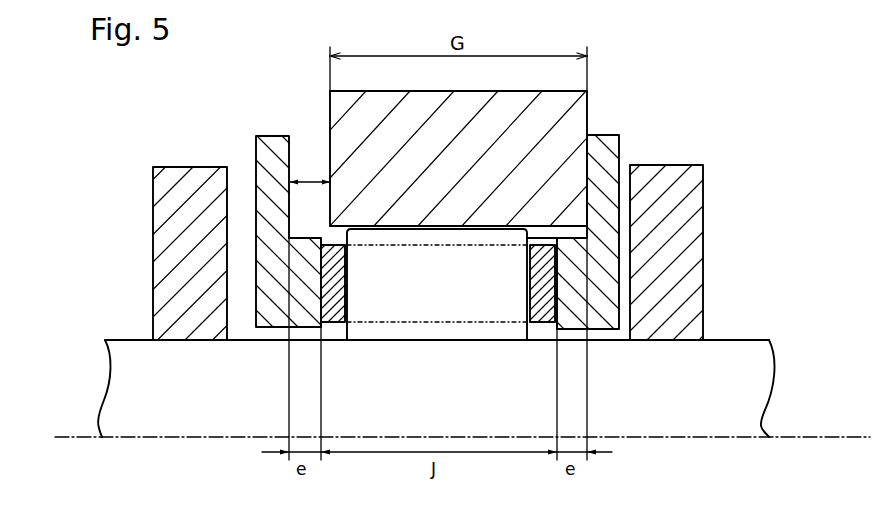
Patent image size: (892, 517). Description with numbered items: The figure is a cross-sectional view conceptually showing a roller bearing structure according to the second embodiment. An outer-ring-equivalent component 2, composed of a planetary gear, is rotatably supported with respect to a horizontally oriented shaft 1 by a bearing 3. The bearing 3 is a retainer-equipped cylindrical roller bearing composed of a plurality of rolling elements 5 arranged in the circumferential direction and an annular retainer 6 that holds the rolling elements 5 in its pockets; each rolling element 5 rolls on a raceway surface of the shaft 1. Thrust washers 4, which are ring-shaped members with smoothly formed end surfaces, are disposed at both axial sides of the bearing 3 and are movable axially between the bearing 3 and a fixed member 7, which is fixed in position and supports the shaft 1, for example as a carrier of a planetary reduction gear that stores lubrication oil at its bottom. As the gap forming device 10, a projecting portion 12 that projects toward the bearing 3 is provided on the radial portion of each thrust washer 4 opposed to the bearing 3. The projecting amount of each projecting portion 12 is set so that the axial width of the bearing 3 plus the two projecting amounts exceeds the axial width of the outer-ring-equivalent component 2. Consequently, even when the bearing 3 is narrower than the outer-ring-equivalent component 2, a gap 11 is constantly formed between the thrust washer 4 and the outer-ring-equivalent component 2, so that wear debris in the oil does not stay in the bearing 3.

The shaft 1 is at (123, 342).
The outer-ring-equivalent component 2 is at (340, 108).
The bearing 3 is at (652, 94).
The thrust washer 4 is at (257, 152).
The rolling element 5 is at (493, 233).
The retainer 6 is at (552, 237).
The fixed member 7 is at (156, 198).
The gap forming device 10 is at (292, 100).
The gap 11 is at (306, 180).
The projecting portion 12 is at (318, 276).